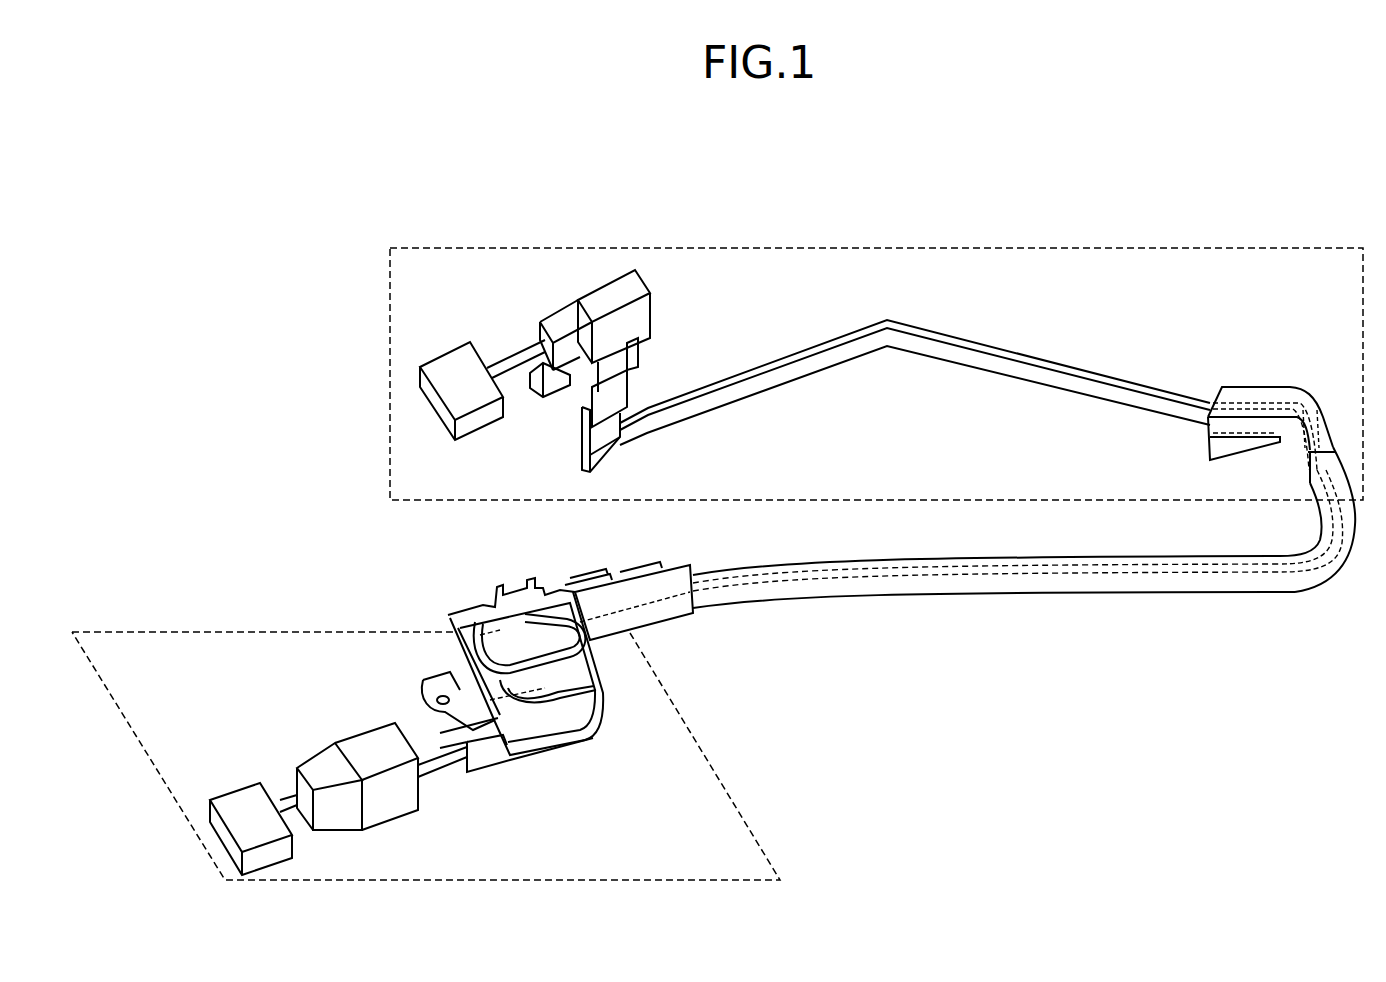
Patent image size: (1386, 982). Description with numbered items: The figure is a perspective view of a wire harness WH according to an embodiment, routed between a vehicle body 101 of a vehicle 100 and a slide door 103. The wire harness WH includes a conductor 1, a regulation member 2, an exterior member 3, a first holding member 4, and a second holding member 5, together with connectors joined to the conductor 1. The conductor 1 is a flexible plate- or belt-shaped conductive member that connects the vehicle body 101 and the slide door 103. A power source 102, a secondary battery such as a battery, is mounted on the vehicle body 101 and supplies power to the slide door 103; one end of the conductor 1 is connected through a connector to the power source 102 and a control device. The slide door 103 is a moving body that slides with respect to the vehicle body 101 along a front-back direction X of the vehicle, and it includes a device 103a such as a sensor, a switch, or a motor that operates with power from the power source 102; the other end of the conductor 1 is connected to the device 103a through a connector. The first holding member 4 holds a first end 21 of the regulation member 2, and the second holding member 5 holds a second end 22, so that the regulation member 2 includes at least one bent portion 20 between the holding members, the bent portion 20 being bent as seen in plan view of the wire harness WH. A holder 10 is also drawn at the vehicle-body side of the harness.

The wire harness WH is at (662, 226).
The vehicle 100 is at (346, 256).
The vehicle body 101 is at (276, 632).
The power source 102 is at (238, 787).
The slide door 103 is at (1186, 248).
The device 103a is at (434, 358).
The conductor 1 is at (1095, 575).
The regulation member 2 is at (918, 556).
The exterior member 3 is at (803, 558).
The first holding member 4 is at (516, 577).
The second holding member 5 is at (1274, 372).
The holder 10 is at (466, 590).
The bent portion 20 is at (1318, 525).
The first end 21 is at (483, 600).
The second end 22 is at (1305, 414).
The front-back direction X is at (975, 654).